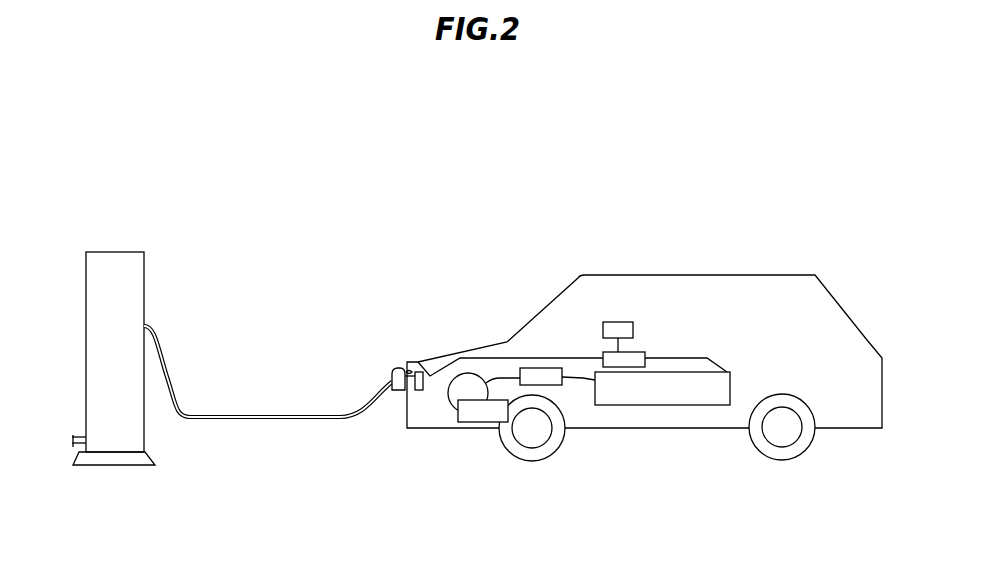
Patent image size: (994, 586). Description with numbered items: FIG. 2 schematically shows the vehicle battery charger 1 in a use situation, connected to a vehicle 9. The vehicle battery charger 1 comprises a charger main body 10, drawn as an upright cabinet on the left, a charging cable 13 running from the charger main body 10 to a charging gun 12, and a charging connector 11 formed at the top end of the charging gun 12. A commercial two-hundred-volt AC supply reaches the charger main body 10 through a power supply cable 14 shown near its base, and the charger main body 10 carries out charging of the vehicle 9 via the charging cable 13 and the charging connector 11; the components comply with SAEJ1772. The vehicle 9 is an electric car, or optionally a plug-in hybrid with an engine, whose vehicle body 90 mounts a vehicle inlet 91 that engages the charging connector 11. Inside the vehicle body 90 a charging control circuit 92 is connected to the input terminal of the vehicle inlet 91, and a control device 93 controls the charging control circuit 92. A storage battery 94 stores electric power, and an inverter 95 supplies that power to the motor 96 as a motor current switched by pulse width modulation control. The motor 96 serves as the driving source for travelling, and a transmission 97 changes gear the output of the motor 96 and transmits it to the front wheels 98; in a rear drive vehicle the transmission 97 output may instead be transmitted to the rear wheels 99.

The vehicle battery charger 1 is at (140, 188).
The charger main body 10 is at (114, 252).
The charging connector 11 is at (405, 374).
The charging gun 12 is at (378, 390).
The charging cable 13 is at (334, 412).
The power supply cable 14 is at (80, 434).
The vehicle 9 is at (744, 225).
The vehicle body 90 is at (853, 428).
The vehicle inlet 91 is at (418, 372).
The charging control circuit 92 is at (637, 352).
The control device 93 is at (618, 322).
The storage battery 94 is at (682, 406).
The inverter 95 is at (558, 386).
The motor 96 is at (453, 403).
The transmission 97 is at (478, 424).
The front wheels 98 is at (508, 453).
The rear wheels 99 is at (805, 450).